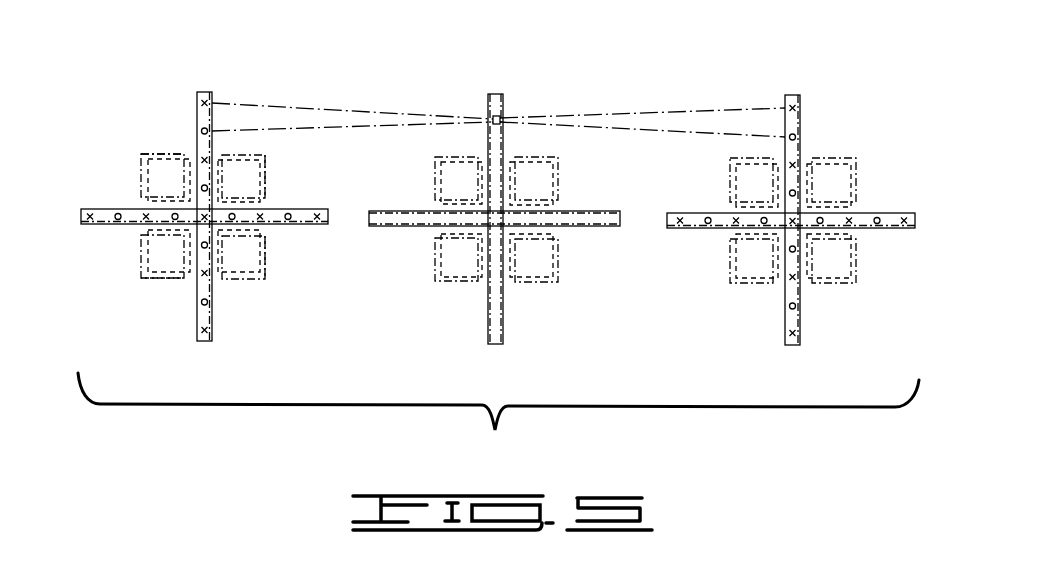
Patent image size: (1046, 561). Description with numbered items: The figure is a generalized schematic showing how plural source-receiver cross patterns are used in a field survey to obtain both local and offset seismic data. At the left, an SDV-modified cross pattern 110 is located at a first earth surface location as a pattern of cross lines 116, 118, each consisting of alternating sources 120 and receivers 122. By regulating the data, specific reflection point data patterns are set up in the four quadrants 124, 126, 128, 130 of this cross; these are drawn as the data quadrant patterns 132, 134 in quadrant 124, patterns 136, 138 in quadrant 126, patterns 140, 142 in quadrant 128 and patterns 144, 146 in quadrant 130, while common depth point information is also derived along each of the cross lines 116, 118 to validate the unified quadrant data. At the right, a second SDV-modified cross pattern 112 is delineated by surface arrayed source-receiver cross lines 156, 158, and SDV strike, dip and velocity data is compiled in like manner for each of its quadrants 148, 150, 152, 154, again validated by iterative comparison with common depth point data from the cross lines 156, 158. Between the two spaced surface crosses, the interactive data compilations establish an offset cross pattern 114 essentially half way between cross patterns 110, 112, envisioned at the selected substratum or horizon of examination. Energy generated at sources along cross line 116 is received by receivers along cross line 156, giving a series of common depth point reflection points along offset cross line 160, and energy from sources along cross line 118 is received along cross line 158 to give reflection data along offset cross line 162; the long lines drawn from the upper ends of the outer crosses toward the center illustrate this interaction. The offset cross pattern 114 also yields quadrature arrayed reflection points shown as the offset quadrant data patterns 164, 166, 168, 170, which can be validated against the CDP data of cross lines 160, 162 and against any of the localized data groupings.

The SDV-modified cross pattern 110 is at (243, 73).
The SDV-modified cross pattern 112 is at (818, 78).
The offset cross pattern 114 is at (519, 76).
The cross line 116 is at (210, 103).
The cross line 118 is at (320, 209).
The source 120 is at (84, 211).
The receiver 122 is at (207, 132).
The quadrant 124 is at (279, 167).
The quadrant 126 is at (273, 263).
The quadrant 128 is at (143, 280).
The quadrant 130 is at (143, 147).
The data quadrant pattern 132 is at (240, 157).
The data quadrant pattern 134 is at (265, 183).
The data quadrant pattern 136 is at (261, 253).
The data quadrant pattern 138 is at (265, 273).
The data quadrant pattern 140 is at (155, 280).
The data quadrant pattern 142 is at (178, 274).
The data quadrant pattern 144 is at (167, 155).
The data quadrant pattern 146 is at (150, 160).
The quadrant 148 is at (890, 173).
The quadrant 150 is at (890, 301).
The quadrant 152 is at (713, 303).
The quadrant 154 is at (720, 173).
The source-receiver cross line 156 is at (803, 106).
The source-receiver cross line 158 is at (877, 229).
The offset cross line 160 is at (503, 113).
The offset cross line 162 is at (590, 227).
The offset quadrant data pattern 164 is at (545, 178).
The offset quadrant data pattern 166 is at (545, 265).
The offset quadrant data pattern 168 is at (450, 258).
The offset quadrant data pattern 170 is at (452, 175).